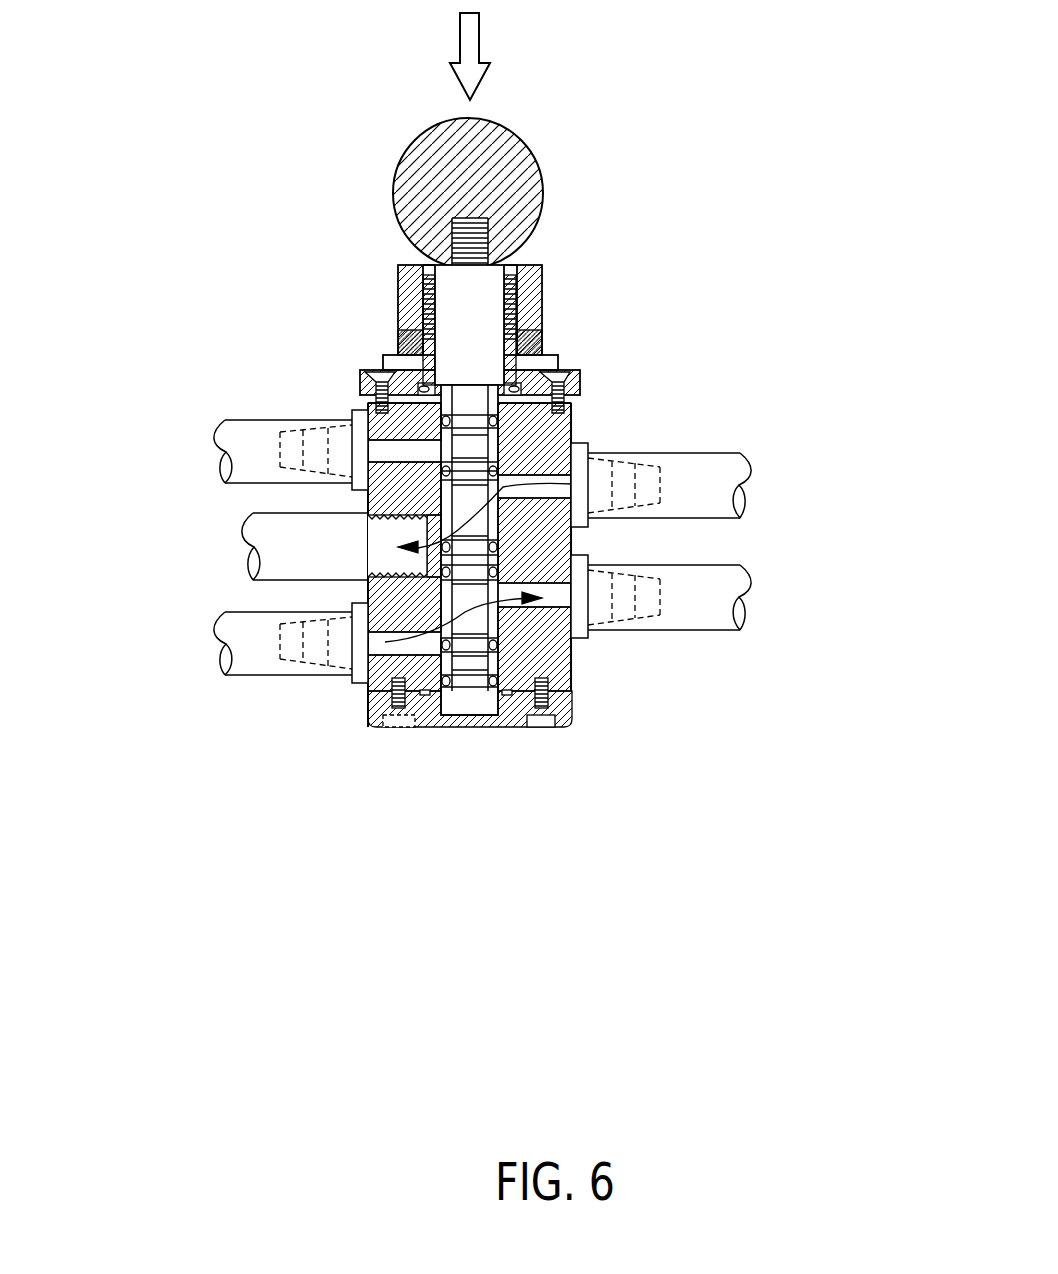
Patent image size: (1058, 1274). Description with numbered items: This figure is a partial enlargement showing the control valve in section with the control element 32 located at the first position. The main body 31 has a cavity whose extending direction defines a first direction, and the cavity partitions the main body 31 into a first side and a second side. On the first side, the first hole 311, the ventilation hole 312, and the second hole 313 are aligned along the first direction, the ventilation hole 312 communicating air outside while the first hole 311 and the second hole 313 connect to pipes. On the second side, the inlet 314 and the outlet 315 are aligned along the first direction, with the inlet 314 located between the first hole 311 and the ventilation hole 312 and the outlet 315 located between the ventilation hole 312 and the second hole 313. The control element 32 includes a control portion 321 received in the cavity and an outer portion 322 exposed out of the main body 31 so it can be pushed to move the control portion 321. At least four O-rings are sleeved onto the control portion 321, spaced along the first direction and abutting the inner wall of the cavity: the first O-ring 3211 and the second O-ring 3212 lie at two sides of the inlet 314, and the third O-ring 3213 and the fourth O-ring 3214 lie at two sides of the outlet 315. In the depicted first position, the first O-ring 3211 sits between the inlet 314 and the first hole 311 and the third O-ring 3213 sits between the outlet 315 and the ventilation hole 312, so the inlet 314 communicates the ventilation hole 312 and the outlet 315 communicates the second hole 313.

The main body 31 is at (545, 435).
The first hole 311 is at (385, 447).
The ventilation hole 312 is at (380, 566).
The second hole 313 is at (395, 650).
The inlet 314 is at (572, 482).
The outlet 315 is at (556, 602).
The control element 32 is at (488, 469).
The control portion 321 is at (488, 546).
The outer portion 322 is at (540, 182).
The first O-ring 3211 is at (458, 473).
The second O-ring 3212 is at (477, 547).
The third O-ring 3213 is at (477, 573).
The fourth O-ring 3214 is at (473, 645).